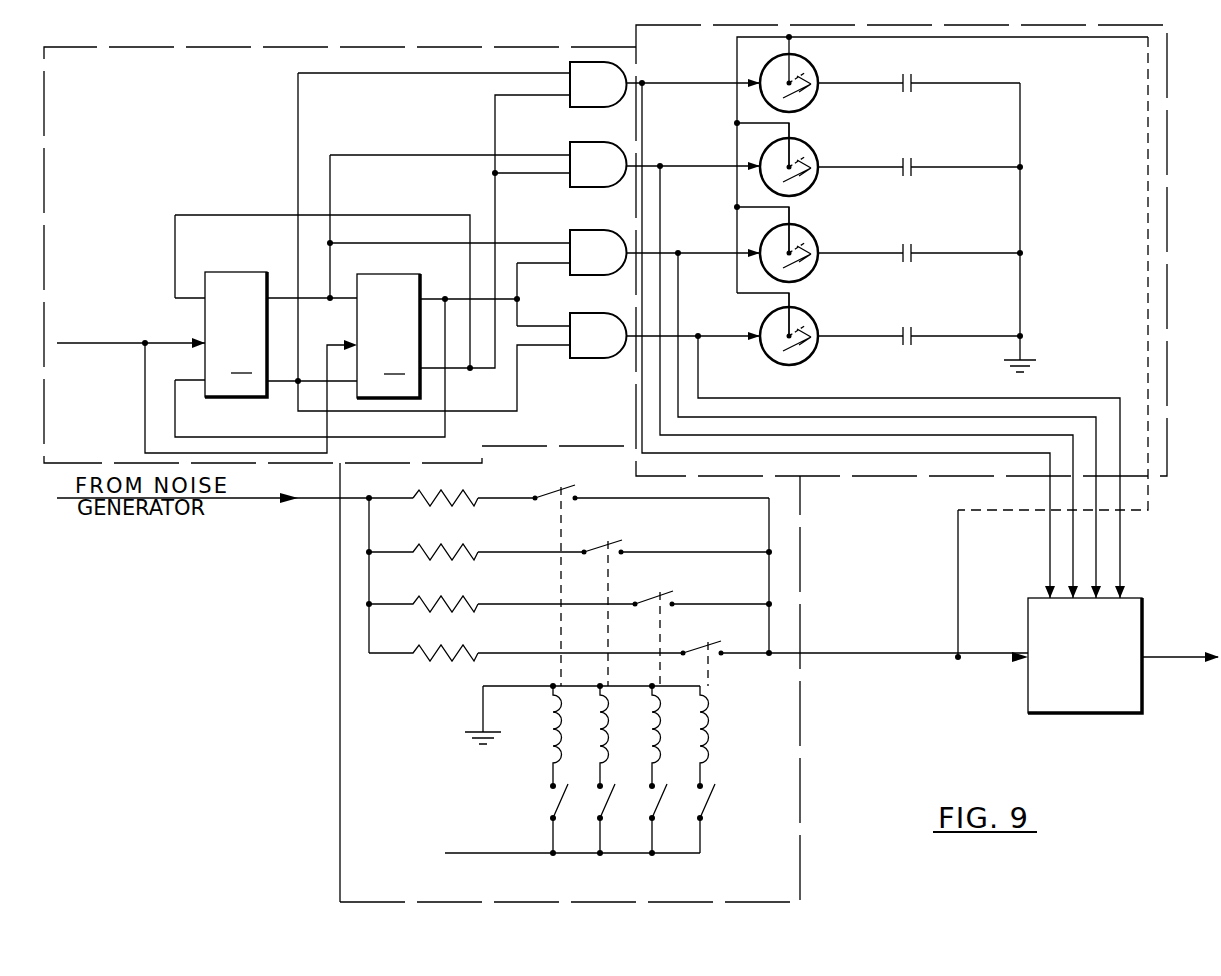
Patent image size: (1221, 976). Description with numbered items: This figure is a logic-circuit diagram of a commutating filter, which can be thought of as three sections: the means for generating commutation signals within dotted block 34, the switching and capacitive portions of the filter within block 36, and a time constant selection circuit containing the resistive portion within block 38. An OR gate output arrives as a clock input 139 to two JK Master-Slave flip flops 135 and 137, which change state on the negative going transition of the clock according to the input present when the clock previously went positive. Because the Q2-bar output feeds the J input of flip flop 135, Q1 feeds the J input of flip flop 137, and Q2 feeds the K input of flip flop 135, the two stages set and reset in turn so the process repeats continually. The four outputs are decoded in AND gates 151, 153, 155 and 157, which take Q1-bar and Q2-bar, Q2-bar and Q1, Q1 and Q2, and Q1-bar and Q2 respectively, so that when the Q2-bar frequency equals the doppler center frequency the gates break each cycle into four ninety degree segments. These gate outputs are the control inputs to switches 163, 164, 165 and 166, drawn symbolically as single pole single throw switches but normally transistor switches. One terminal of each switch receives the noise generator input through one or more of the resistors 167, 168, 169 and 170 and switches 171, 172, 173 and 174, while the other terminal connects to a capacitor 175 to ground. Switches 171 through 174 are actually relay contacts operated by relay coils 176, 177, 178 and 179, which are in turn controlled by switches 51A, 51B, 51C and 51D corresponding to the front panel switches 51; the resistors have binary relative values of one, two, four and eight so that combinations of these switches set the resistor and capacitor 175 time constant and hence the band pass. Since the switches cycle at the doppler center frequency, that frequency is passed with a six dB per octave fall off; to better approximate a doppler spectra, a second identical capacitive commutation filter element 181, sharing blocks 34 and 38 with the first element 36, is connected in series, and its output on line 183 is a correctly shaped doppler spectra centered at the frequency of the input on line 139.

The dotted block 34 is at (373, 47).
The block 36 is at (1168, 232).
The block 38 is at (801, 752).
The switches 51 is at (561, 840).
The switch 51A is at (553, 801).
The switch 51B is at (600, 805).
The switch 51C is at (660, 801).
The switch 51D is at (685, 818).
The JK Master-Slave flip flop 135 is at (252, 272).
The JK Master-Slave flip flop 137 is at (388, 274).
The clock input 139 is at (172, 343).
The AND gate 151 is at (578, 107).
The AND gate 153 is at (581, 188).
The AND gate 155 is at (586, 275).
The AND gate 157 is at (592, 358).
The switch 163 is at (811, 67).
The switch 164 is at (813, 150).
The switch 165 is at (813, 236).
The switch 166 is at (813, 319).
The resistor 167 is at (450, 506).
The resistor 168 is at (450, 560).
The resistor 169 is at (450, 612).
The resistor 170 is at (440, 660).
The switch 171 is at (560, 485).
The switch 172 is at (618, 540).
The switch 173 is at (668, 590).
The switch 174 is at (705, 640).
The capacitor 175 is at (912, 75).
The relay coil 176 is at (552, 745).
The relay coil 177 is at (606, 735).
The relay coil 178 is at (658, 745).
The relay coil 179 is at (713, 742).
The second capacitive commutation filter element 181 is at (1110, 714).
The output line 183 is at (1180, 660).